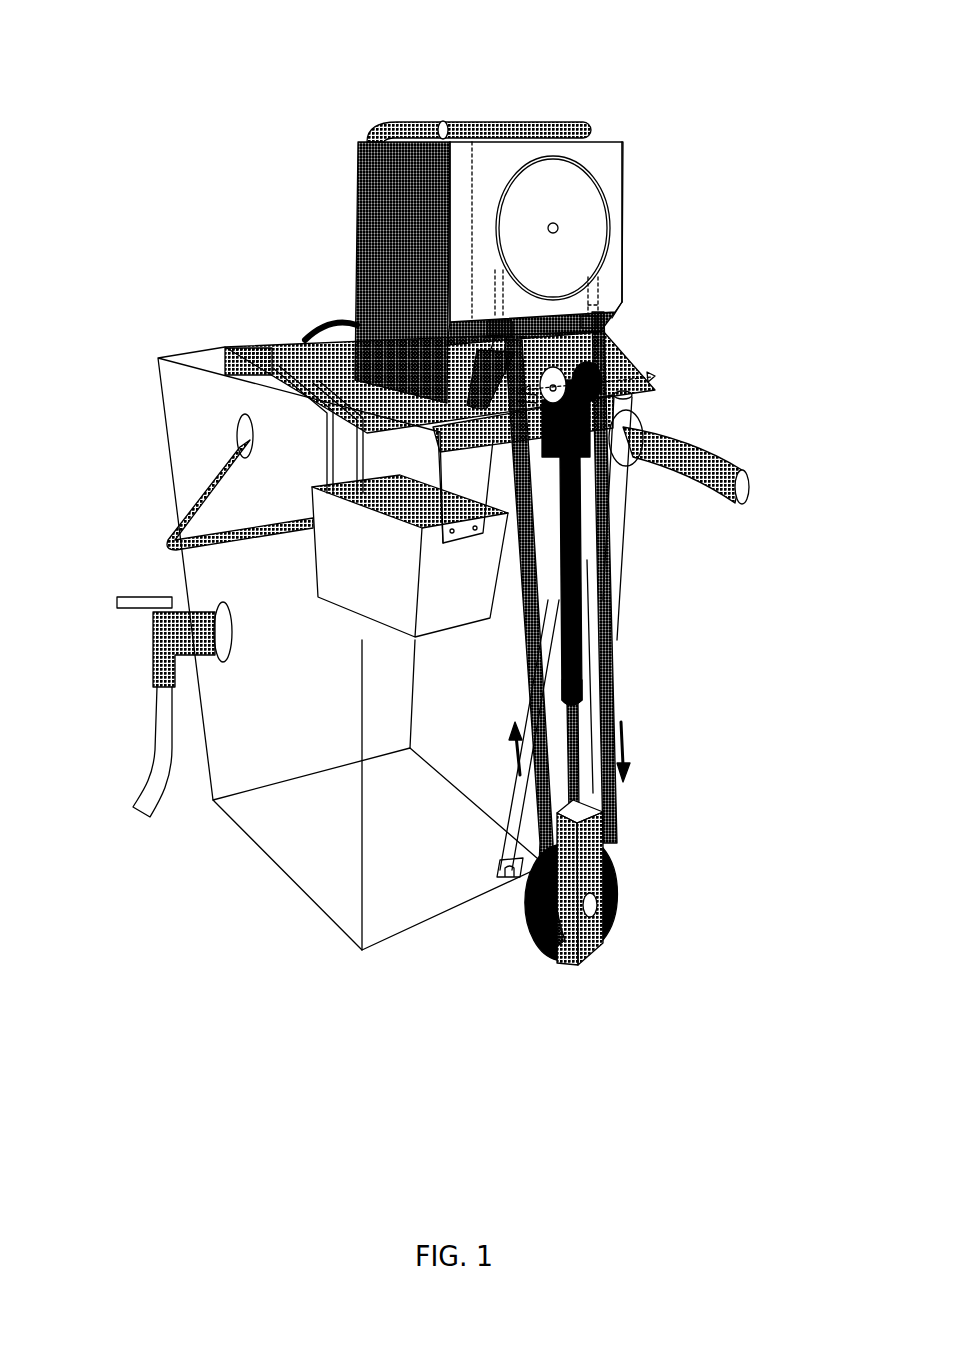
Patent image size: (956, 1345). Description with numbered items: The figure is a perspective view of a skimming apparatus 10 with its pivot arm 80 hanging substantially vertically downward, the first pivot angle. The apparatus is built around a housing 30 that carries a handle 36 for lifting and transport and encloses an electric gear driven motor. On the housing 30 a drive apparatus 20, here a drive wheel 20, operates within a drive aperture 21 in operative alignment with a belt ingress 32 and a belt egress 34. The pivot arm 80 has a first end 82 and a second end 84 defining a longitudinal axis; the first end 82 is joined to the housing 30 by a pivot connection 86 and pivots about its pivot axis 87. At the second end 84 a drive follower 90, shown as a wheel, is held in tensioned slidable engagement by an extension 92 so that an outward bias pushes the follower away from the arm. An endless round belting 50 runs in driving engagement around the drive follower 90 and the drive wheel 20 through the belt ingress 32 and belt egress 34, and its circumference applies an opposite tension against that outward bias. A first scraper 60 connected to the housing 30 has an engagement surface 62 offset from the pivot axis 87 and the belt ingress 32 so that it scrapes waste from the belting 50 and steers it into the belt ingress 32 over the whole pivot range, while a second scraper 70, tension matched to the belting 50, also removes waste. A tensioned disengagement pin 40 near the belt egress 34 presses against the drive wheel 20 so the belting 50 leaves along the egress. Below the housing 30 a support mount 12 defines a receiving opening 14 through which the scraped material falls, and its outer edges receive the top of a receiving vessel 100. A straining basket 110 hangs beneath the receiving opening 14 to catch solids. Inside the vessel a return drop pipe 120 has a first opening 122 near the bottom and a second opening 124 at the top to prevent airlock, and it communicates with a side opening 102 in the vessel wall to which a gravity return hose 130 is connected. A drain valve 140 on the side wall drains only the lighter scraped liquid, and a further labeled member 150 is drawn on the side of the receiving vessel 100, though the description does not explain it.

The skimming apparatus 10 is at (97, 88).
The support mount 12 is at (250, 343).
The receiving opening 14 is at (496, 412).
The drive apparatus 20 is at (588, 227).
The drive aperture 21 is at (610, 240).
The housing 30 is at (612, 142).
The belt ingress 32 is at (497, 287).
The belt egress 34 is at (605, 293).
The handle 36 is at (573, 120).
The tensioned disengagement pin 40 is at (590, 318).
The belting 50 is at (613, 817).
The first scraper 60 is at (473, 388).
The engagement surface 62 is at (478, 352).
The second scraper 70 is at (483, 323).
The pivot arm 80 is at (563, 582).
The first end 82 is at (578, 485).
The second end 84 is at (583, 688).
The pivot connection 86 is at (597, 376).
The pivot axis 87 is at (658, 376).
The drive follower 90 is at (617, 882).
The extension 92 is at (582, 735).
The receiving vessel 100 is at (162, 393).
The side opening 102 is at (640, 458).
The straining basket 110 is at (317, 582).
The return drop pipe 120 is at (515, 815).
The first opening 122 is at (497, 863).
The second opening 124 is at (647, 392).
The gravity return hose 130 is at (713, 452).
The drain valve 140 is at (172, 597).
The support rod 150 is at (205, 477).